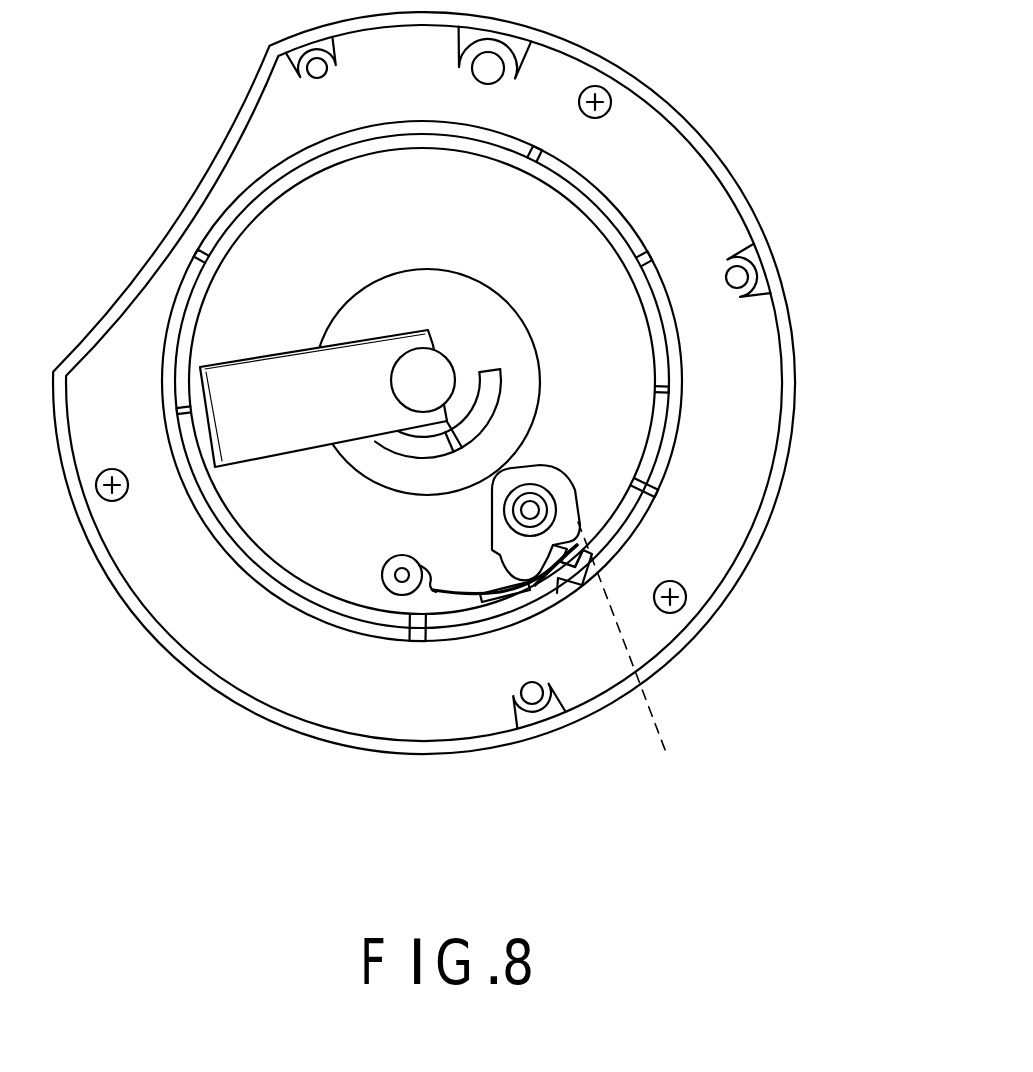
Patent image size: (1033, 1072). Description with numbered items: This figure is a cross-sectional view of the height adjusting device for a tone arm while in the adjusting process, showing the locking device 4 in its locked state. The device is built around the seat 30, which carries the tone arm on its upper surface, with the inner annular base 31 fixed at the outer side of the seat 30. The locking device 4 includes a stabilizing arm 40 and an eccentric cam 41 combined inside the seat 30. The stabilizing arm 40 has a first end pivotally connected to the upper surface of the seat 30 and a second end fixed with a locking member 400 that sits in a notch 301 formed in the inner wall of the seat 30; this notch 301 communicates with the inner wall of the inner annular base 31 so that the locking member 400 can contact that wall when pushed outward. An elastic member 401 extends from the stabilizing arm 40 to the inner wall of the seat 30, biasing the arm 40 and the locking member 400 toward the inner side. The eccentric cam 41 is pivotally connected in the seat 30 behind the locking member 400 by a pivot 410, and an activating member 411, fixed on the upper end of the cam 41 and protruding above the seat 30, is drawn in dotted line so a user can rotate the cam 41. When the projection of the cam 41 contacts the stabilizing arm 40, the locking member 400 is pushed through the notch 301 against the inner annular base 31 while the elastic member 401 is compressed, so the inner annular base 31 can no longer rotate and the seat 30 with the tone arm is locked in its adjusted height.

The locking device 4 is at (667, 807).
The seat 30 is at (344, 573).
The inner annular base 31 is at (585, 575).
The notch 301 is at (590, 538).
The stabilizing arm 40 is at (427, 597).
The locking member 400 is at (557, 573).
The elastic member 401 is at (498, 600).
The eccentric cam 41 is at (547, 480).
The pivot 410 is at (560, 493).
The activating member 411 is at (638, 656).